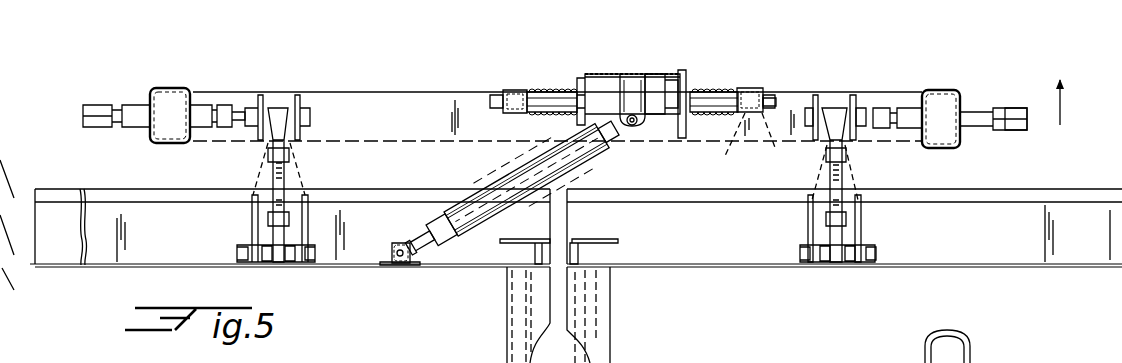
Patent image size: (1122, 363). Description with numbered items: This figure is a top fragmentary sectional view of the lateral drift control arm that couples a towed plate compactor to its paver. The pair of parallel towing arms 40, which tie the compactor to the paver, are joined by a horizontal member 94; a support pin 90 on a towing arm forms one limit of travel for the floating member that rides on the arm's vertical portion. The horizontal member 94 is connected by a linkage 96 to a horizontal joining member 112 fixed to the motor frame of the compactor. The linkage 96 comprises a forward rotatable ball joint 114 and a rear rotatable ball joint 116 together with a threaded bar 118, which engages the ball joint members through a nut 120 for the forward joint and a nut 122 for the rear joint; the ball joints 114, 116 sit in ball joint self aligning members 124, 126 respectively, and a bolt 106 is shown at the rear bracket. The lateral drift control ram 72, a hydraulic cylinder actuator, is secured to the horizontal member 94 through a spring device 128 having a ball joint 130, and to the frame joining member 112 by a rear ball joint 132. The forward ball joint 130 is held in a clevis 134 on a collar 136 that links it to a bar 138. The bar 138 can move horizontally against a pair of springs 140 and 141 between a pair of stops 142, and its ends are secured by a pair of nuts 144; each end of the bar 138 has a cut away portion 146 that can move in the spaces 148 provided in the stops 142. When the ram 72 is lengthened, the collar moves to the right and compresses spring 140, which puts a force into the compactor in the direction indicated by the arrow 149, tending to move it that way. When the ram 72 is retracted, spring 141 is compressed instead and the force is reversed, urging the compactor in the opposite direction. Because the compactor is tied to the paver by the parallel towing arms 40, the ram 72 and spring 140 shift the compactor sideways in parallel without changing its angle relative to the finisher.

The towing arms 40 is at (183, 88).
The lateral drift control ram 72 is at (565, 174).
The support pin 90 is at (1007, 117).
The horizontal member 94 is at (897, 93).
The linkage 96 is at (862, 173).
The bolt 106 is at (866, 253).
The horizontal joining member 112 is at (992, 177).
The forward rotatable ball joint 114 is at (835, 108).
The rear rotatable ball joint 116 is at (833, 265).
The threaded bar 118 is at (826, 173).
The nut 120 is at (846, 154).
The nut 122 is at (846, 218).
The ball joint self aligning member 124 is at (858, 100).
The ball joint self aligning member 126 is at (857, 265).
The spring device 128 is at (620, 58).
The ball joint 130 is at (637, 127).
The rear ball joint 132 is at (402, 262).
The clevis 134 is at (628, 84).
The collar 136 is at (655, 78).
The bar 138 is at (745, 88).
The spring 140 is at (702, 92).
The spring 141 is at (540, 91).
The stops 142 is at (518, 90).
The nuts 144 is at (500, 95).
The cut away portion 146 is at (769, 140).
The spaces 148 is at (728, 146).
The arrow 149 is at (660, 22).